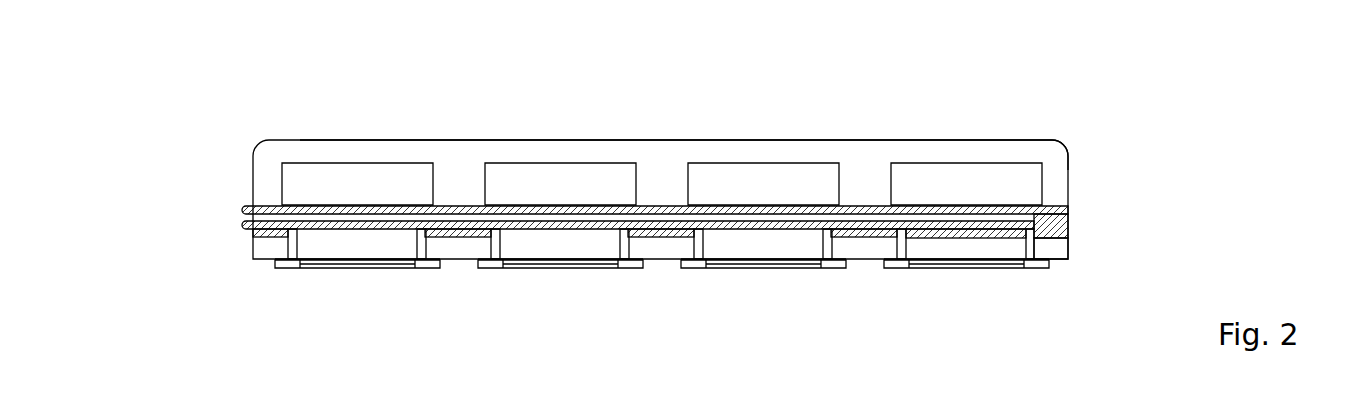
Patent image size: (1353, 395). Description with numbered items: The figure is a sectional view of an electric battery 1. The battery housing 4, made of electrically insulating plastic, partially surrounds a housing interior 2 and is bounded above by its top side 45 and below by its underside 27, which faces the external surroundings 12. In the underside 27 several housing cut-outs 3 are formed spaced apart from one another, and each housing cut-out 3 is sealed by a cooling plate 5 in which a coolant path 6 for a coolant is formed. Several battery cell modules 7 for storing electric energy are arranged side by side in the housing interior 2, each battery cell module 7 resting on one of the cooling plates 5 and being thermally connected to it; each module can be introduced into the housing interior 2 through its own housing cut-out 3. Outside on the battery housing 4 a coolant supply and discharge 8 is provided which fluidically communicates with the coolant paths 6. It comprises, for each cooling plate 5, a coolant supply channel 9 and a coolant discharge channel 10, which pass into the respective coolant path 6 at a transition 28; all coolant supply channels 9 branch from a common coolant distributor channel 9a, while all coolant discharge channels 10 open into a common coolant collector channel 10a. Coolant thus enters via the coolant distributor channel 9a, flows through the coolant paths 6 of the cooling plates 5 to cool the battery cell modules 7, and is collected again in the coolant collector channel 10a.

The electric battery 1 is at (713, 141).
The housing interior 2 is at (658, 158).
The housing cut-outs 3 is at (969, 270).
The battery housing 4 is at (798, 140).
The cooling plate 5 is at (662, 310).
The coolant path 6 is at (937, 312).
The battery cell module 7 is at (973, 195).
The coolant supply and discharge 8 is at (611, 224).
The coolant supply channel 9 is at (886, 292).
The coolant distributor channel 9a is at (240, 220).
The coolant discharge channel 10 is at (1058, 292).
The coolant collector channel 10a is at (258, 209).
The external surroundings 12 is at (641, 64).
The underside 27 is at (1060, 266).
The transition 28 is at (1029, 320).
The top side 45 is at (972, 140).